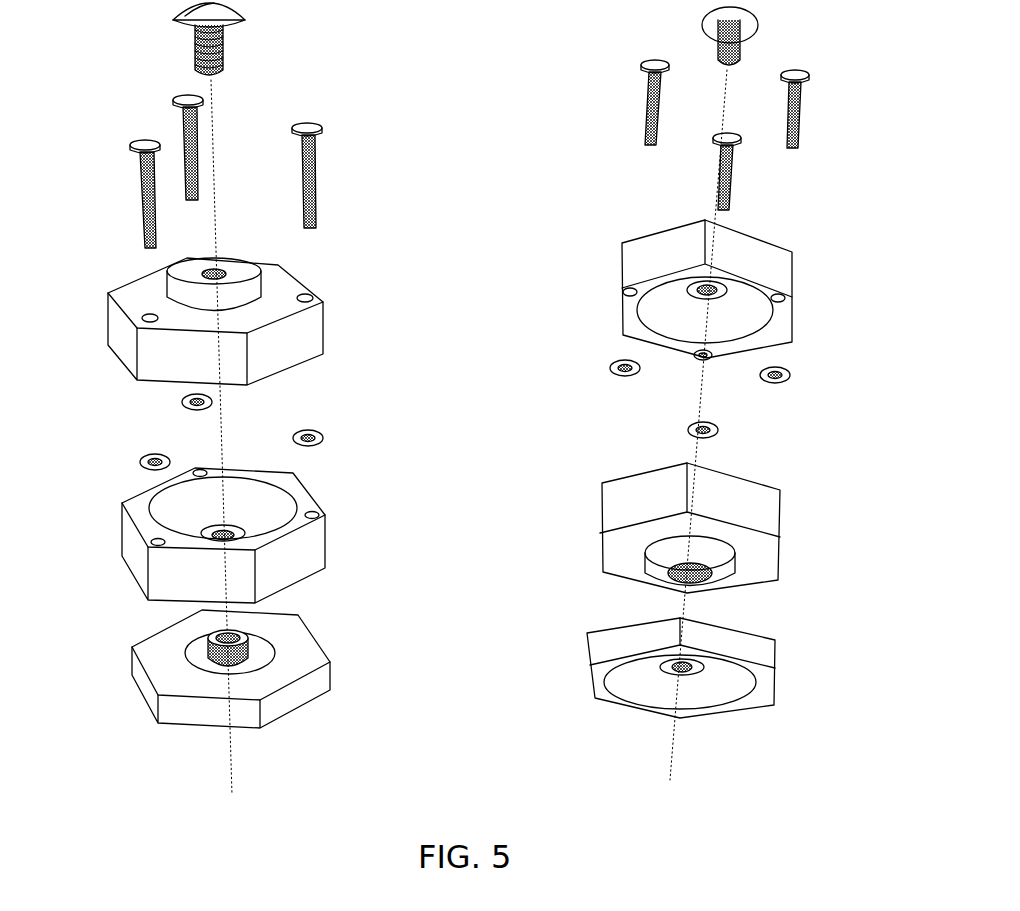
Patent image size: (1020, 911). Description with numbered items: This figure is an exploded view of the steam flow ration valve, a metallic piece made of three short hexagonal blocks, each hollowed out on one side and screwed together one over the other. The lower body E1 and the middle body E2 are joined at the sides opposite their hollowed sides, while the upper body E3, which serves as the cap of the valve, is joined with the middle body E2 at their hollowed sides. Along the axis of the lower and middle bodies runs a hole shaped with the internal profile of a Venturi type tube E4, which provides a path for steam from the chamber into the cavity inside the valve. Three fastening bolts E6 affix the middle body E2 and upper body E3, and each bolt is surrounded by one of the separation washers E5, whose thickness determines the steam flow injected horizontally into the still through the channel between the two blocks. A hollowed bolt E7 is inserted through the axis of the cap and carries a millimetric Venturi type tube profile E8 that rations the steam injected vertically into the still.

The lower body E1 is at (160, 665).
The middle body E2 is at (160, 518).
The upper body E3 is at (160, 345).
The internal profile of a Venturi type tube E4 is at (247, 662).
The separation washers E5 is at (785, 375).
The fastening bolts E6 is at (800, 110).
The hollowed bolt E7 is at (748, 30).
The Venturi type tube profile of the bolt E8 is at (740, 60).